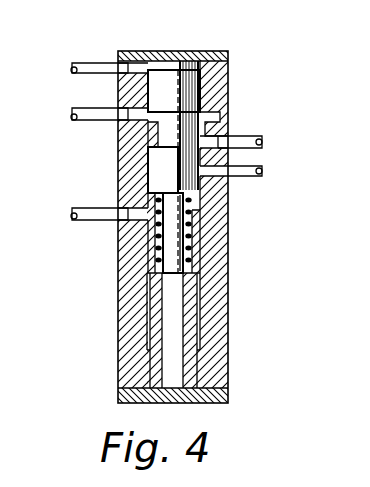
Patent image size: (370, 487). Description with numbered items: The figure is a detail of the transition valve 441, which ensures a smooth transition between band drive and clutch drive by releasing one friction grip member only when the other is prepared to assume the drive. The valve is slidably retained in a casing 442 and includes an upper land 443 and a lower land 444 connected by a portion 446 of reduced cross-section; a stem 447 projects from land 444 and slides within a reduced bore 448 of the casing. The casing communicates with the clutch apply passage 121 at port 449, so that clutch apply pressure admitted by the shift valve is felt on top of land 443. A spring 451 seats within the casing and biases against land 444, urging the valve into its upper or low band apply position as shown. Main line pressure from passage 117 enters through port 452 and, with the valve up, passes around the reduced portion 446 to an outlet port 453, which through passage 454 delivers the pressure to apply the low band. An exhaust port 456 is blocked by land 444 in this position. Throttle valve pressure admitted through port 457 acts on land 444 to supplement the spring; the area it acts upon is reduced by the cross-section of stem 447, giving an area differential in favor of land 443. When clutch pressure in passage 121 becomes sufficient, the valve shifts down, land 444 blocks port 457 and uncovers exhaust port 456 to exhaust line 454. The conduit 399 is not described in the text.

The clutch apply passage 121 is at (72, 66).
The main line pressure passage 117 is at (92, 107).
The conduit 399 is at (100, 214).
The transition valve 441 is at (197, 64).
The casing 442 is at (217, 80).
The land 443 is at (152, 97).
The land 444 is at (158, 172).
The portion of reduced cross-section 446 is at (200, 118).
The stem 447 is at (165, 262).
The reduced bore 448 is at (192, 287).
The port 449 is at (142, 63).
The spring 451 is at (198, 215).
The port 452 is at (146, 113).
The outlet port 453 is at (212, 129).
The passage 454 is at (262, 141).
The exhaust port 456 is at (206, 178).
The port 457 is at (147, 205).